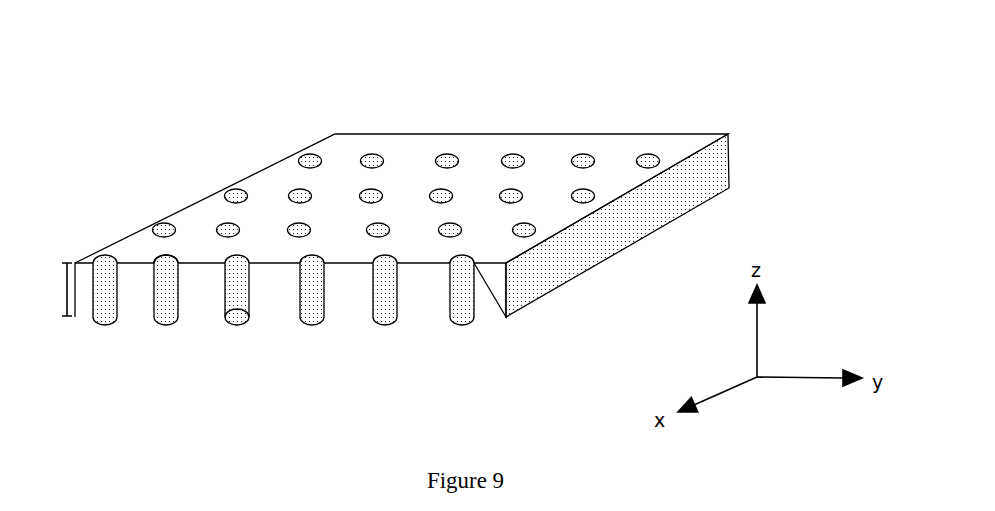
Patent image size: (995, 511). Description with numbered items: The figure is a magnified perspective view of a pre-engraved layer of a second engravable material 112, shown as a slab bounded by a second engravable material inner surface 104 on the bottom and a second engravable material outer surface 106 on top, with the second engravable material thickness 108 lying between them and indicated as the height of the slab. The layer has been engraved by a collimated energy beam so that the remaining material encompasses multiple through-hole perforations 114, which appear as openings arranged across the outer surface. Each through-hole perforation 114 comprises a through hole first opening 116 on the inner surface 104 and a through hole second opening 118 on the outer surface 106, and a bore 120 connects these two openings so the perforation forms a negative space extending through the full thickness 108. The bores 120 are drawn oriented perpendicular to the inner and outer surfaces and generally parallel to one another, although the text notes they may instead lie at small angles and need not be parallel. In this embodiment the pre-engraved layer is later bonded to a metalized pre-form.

The pre-engraved layer of a second engravable material 112 is at (686, 93).
The through-hole perforations 114 is at (306, 160).
The second engravable material outer surface 106 is at (193, 215).
The through hole second opening 118 is at (166, 263).
The second engravable material thickness 108 is at (43, 289).
The second engravable material inner surface 104 is at (137, 317).
The through hole first opening 116 is at (238, 316).
The bore 120 is at (385, 290).